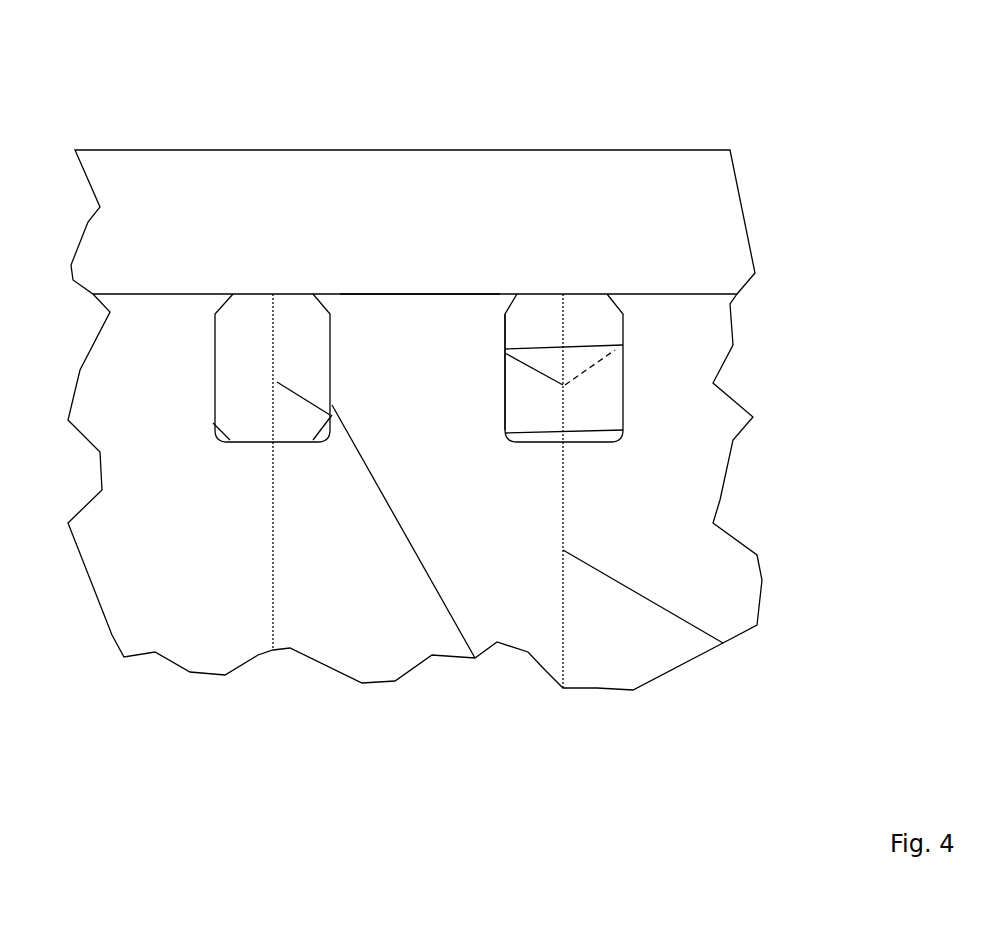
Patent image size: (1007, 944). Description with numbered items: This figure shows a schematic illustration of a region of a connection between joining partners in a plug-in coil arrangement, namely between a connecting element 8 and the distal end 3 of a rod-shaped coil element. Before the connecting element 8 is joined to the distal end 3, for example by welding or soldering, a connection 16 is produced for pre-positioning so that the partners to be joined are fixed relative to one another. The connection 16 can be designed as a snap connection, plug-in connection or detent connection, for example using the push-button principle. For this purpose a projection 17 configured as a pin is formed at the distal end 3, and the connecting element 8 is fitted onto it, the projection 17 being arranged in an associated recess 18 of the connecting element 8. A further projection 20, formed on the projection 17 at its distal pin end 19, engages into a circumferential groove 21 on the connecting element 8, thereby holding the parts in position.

The distal end 3 is at (532, 578).
The connecting element 8 is at (707, 208).
The connection 16 is at (505, 349).
The projection 17 is at (480, 434).
The recess 18 is at (336, 300).
The distal pin end 19 is at (397, 310).
The projection 20 is at (500, 300).
The groove 21 is at (507, 315).